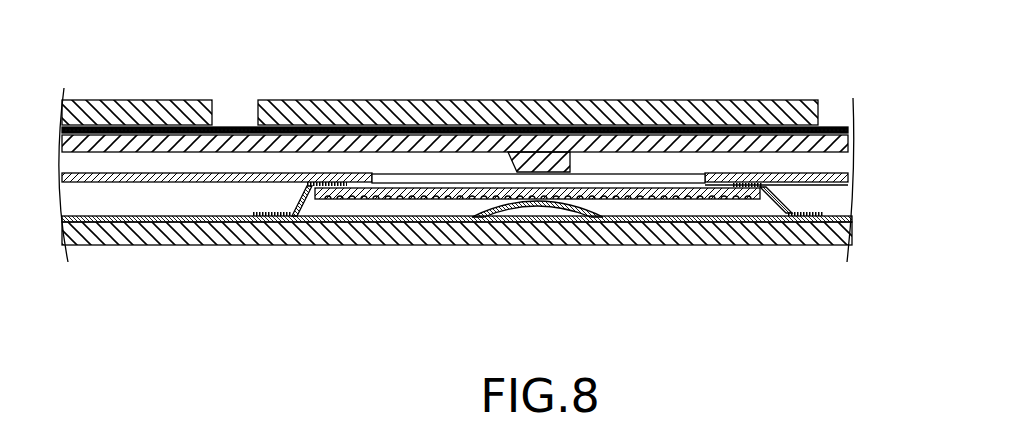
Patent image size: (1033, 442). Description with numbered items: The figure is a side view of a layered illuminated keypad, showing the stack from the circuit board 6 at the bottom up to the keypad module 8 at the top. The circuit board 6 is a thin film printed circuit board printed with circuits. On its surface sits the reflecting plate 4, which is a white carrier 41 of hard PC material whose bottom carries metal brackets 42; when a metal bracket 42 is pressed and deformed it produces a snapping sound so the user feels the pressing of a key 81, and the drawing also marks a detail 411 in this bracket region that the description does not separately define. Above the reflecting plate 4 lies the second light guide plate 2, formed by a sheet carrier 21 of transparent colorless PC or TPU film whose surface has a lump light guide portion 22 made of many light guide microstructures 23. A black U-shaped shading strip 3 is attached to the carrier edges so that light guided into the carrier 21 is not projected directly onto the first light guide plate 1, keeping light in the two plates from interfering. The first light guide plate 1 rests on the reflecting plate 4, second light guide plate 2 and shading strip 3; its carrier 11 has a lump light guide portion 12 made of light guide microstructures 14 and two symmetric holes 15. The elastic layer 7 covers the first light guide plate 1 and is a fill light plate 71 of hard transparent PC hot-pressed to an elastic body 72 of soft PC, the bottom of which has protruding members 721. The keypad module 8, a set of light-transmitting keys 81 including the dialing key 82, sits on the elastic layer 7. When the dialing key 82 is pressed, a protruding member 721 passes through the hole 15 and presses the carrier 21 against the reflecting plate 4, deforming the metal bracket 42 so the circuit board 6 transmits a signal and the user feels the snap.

The first light guide plate 1 is at (455, 179).
The carrier 11 is at (230, 172).
The lump light guide portion 12 is at (109, 160).
The light guide microstructures 14 is at (163, 184).
The hole 15 is at (450, 180).
The second light guide plate 2 is at (538, 112).
The sheet carrier 21 is at (753, 229).
The lump light guide portion 22 is at (660, 213).
The light guide microstructures 23 is at (710, 200).
The shading strip 3 is at (773, 195).
The reflecting plate 4 is at (423, 272).
The white carrier 41 is at (305, 250).
The electrode pad 411 is at (473, 217).
The metal bracket 42 is at (497, 257).
The circuit board 6 is at (256, 218).
The elastic layer 7 is at (469, 95).
The fill light plate 71 is at (783, 143).
The elastic body 72 is at (830, 119).
The protruding member 721 is at (550, 162).
The keypad module 8 is at (440, 62).
The key 81 is at (133, 100).
The dialing key 82 is at (381, 112).